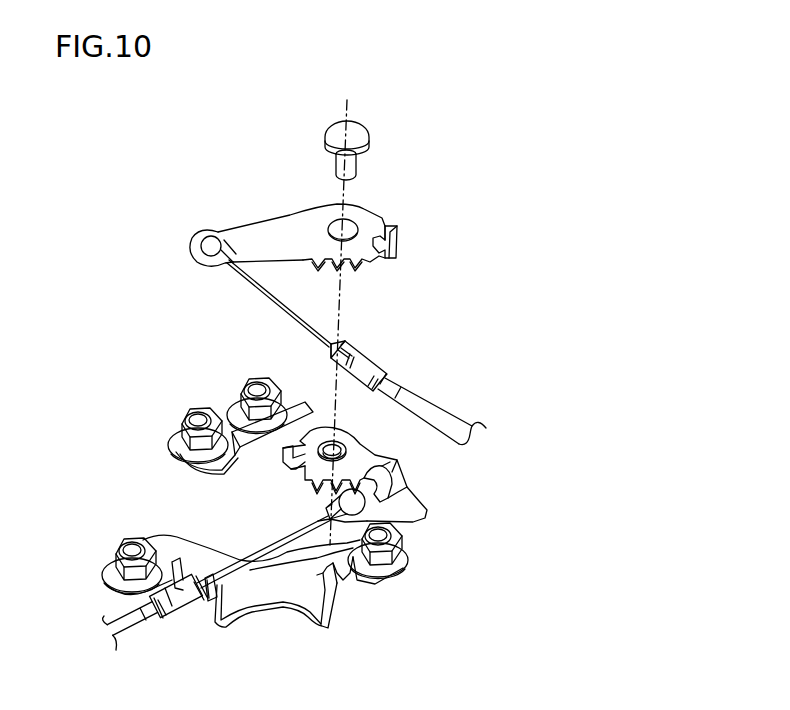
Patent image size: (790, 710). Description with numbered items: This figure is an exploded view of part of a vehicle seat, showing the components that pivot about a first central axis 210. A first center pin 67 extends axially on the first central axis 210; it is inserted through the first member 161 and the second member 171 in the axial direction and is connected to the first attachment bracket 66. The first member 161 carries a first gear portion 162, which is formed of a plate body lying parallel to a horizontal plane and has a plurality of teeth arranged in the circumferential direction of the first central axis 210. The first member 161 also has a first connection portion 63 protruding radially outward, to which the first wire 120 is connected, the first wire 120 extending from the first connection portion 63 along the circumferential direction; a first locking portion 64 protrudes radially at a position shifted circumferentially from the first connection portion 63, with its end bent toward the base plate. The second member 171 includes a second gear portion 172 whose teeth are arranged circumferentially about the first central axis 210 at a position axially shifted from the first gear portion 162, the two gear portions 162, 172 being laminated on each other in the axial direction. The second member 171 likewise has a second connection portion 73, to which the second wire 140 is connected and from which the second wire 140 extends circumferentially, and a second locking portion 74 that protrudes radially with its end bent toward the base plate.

The first central axis 210 is at (346, 106).
The first center pin 67 is at (352, 132).
The first member 161 is at (291, 229).
The first connection portion 63 is at (190, 243).
The first locking portion 64 is at (400, 233).
The first gear portion 162 is at (373, 265).
The first wire 120 is at (256, 296).
The first attachment bracket 66 is at (236, 416).
The second locking portion 74 is at (293, 460).
The second member 171 is at (372, 479).
The second connection portion 73 is at (416, 504).
The second gear portion 172 is at (412, 517).
The second wire 140 is at (244, 564).